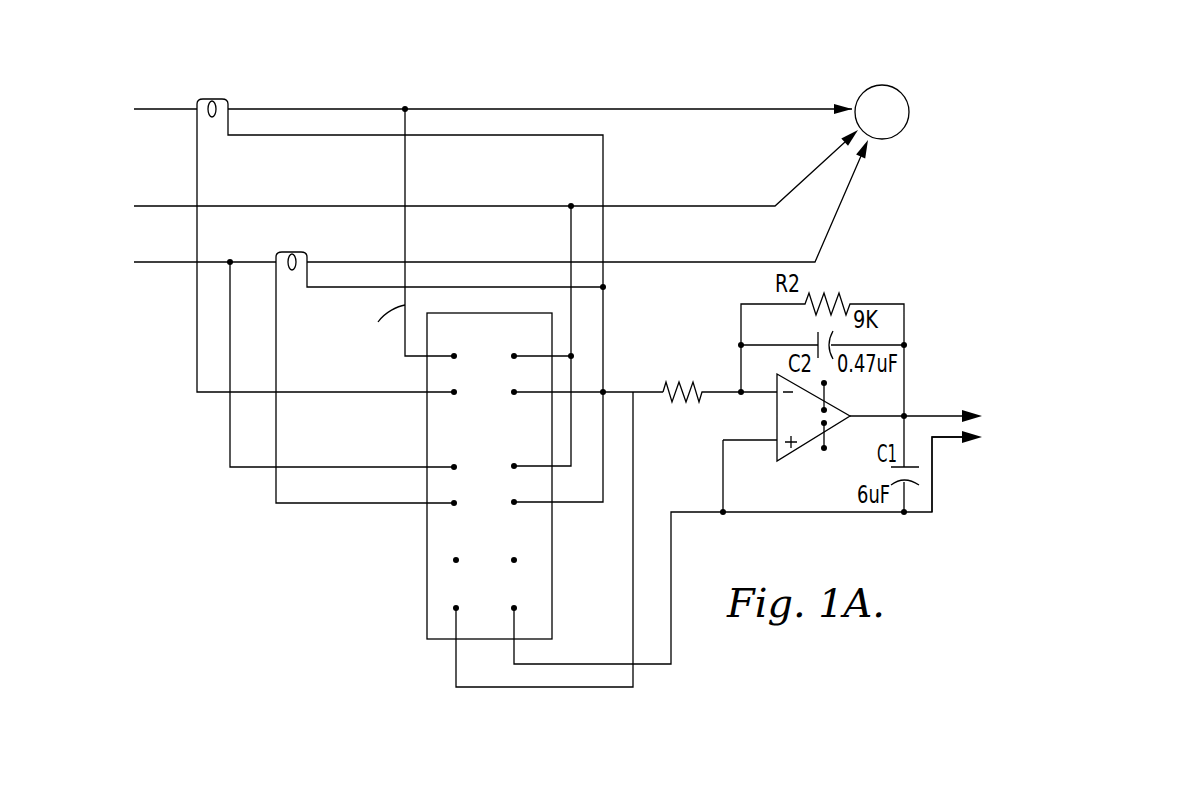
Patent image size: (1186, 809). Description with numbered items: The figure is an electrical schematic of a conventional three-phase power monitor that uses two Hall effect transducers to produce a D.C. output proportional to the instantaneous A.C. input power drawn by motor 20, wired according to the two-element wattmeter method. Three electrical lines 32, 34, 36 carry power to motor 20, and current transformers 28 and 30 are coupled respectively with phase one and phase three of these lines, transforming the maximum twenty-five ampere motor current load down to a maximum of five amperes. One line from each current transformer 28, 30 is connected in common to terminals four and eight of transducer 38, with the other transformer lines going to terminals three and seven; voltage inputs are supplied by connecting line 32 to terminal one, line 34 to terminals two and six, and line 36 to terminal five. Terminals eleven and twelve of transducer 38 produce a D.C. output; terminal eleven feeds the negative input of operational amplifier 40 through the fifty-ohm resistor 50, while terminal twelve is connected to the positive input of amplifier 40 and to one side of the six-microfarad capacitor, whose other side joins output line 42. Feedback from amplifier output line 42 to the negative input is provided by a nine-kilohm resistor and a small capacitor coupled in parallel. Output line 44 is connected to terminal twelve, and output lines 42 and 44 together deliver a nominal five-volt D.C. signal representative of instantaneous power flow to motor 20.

The motor 20 is at (862, 90).
The current transformer 28 is at (204, 100).
The current transformer 30 is at (300, 252).
The electrical line 32 is at (636, 108).
The electrical line 34 is at (536, 205).
The electrical line 36 is at (527, 259).
The transducer 38 is at (452, 583).
The operational amplifier 40 is at (802, 437).
The output line 42 is at (918, 410).
The output line 44 is at (932, 468).
The resistor R1 50 is at (702, 394).